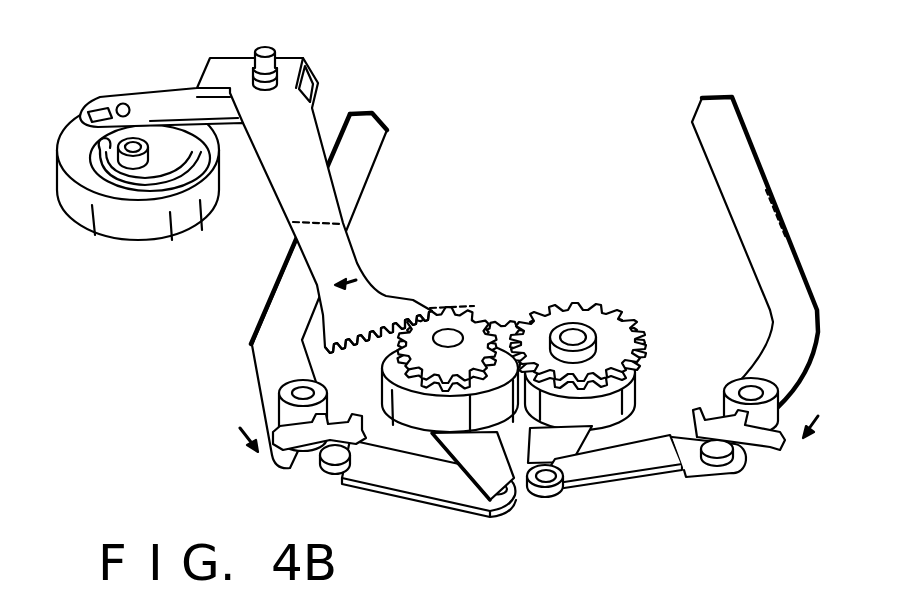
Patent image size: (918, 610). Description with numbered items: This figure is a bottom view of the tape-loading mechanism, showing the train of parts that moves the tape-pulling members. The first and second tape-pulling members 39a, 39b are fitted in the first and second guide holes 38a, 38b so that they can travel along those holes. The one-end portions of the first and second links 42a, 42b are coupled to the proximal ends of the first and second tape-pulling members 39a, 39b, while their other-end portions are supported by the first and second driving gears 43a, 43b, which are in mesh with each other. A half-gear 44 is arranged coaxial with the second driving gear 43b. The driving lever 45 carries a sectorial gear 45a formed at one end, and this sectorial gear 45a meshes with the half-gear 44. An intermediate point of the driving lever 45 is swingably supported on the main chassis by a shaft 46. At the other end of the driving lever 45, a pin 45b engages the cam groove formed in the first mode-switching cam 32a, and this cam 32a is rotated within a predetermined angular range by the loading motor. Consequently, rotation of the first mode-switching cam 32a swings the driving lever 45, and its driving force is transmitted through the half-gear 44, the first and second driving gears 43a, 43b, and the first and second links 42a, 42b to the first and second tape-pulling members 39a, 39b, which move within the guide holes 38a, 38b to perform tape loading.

The first mode-switching cam 32a is at (133, 230).
The first guide hole 38a is at (800, 258).
The second guide hole 38b is at (263, 304).
The first tape-pulling member 39a is at (777, 457).
The second tape-pulling member 39b is at (277, 450).
The first link 42a is at (570, 483).
The second link 42b is at (417, 480).
The first driving gear 43a is at (590, 310).
The second driving gear 43b is at (495, 313).
The half-gear 44 is at (448, 317).
The driving lever 45 is at (317, 60).
The sectorial gear 45a is at (347, 344).
The pin 45b is at (121, 103).
The shaft 46 is at (263, 48).